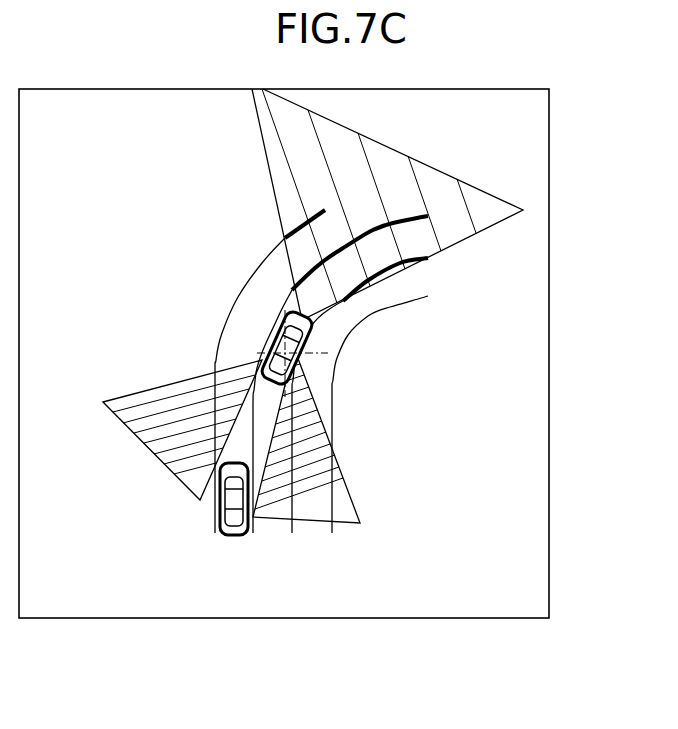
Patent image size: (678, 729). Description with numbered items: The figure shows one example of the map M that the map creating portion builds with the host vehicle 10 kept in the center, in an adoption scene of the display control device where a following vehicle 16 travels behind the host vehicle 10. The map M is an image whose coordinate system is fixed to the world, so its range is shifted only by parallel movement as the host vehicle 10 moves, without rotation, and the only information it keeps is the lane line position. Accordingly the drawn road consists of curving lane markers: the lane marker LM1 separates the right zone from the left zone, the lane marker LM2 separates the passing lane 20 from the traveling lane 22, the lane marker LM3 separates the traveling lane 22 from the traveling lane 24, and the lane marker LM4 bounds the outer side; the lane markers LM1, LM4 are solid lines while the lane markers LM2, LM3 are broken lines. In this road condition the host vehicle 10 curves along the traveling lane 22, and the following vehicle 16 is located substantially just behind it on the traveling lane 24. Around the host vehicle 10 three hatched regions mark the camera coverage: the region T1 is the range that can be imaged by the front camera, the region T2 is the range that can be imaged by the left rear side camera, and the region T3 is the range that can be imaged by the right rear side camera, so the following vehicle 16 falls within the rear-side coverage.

The host vehicle 10 is at (338, 358).
The following vehicle 16 is at (230, 503).
The passing lane 20 is at (360, 333).
The traveling lane 22 is at (380, 266).
The traveling lane 24 is at (282, 300).
The map M is at (549, 173).
The range capable of being imaged by the front camera T1 is at (483, 228).
The range capable of being imaged by the left rear side camera T2 is at (152, 388).
The range capable of being imaged by the right rear side camera T3 is at (338, 443).
The lane marker LM1 is at (332, 534).
The lane marker LM2 is at (292, 534).
The lane marker LM3 is at (253, 534).
The lane marker LM4 is at (215, 534).